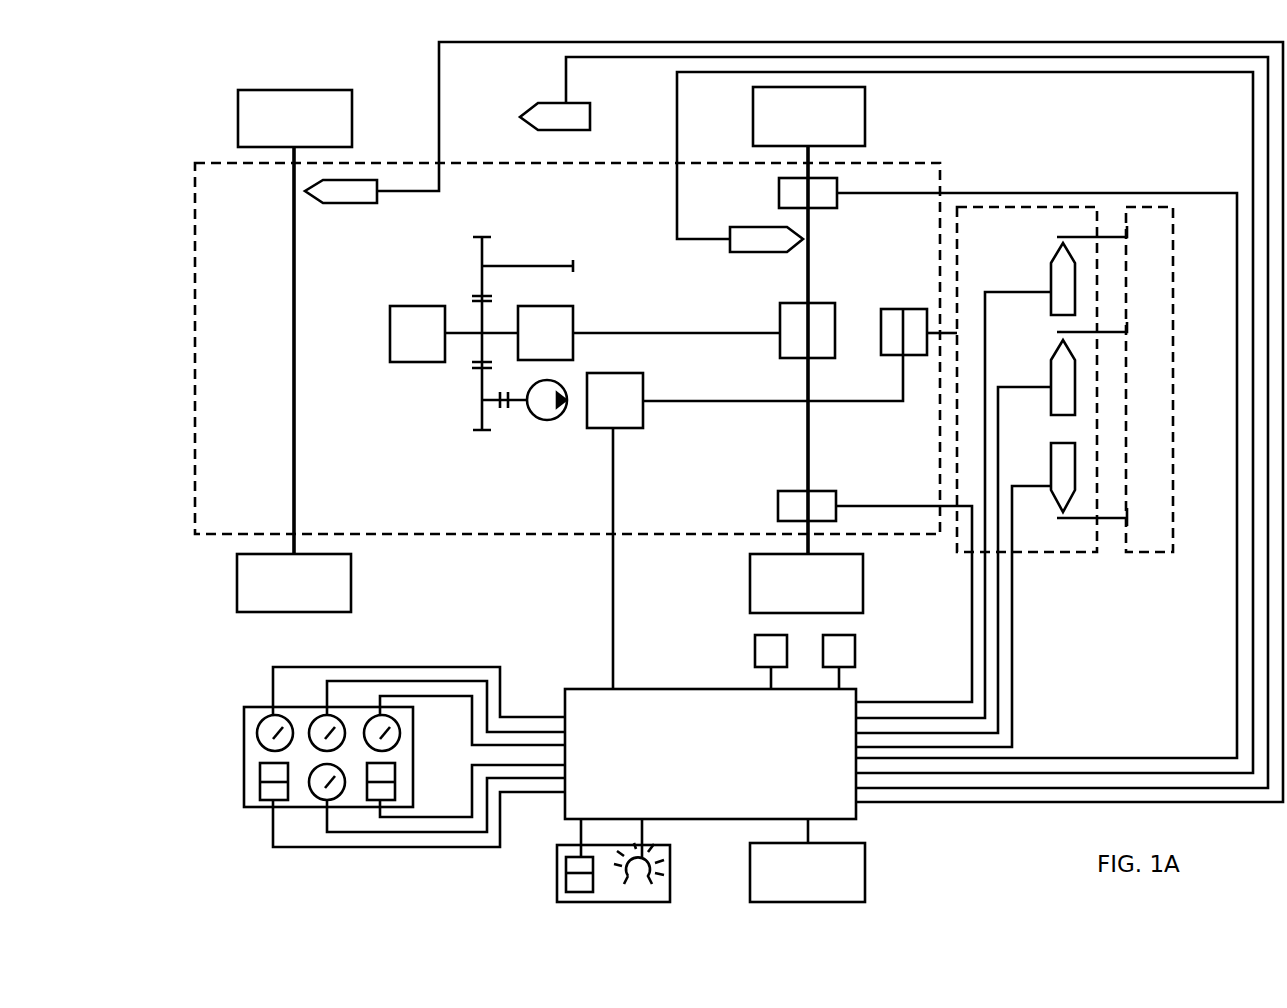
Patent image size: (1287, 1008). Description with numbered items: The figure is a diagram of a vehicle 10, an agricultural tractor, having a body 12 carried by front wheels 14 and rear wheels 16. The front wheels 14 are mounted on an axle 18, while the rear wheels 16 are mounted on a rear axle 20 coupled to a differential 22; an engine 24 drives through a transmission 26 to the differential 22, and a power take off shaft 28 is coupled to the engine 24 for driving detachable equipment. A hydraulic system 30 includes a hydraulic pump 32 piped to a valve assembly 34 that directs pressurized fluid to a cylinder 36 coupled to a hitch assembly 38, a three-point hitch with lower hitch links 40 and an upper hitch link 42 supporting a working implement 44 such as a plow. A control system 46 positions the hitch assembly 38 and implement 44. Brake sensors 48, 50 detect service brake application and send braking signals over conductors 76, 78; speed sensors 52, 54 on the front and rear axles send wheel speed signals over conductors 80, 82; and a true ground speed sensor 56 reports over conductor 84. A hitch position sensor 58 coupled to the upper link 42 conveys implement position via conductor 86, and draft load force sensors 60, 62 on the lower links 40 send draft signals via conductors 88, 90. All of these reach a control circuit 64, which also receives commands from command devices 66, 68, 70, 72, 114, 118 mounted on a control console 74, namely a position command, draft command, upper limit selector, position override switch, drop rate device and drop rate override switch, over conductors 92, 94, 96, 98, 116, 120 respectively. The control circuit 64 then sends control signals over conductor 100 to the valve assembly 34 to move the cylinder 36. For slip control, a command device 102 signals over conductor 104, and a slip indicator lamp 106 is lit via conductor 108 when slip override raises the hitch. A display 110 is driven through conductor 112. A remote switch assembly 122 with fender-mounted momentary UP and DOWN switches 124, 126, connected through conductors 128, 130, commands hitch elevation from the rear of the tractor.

The vehicle 10 is at (168, 167).
The body 12 is at (195, 350).
The front wheels 14 is at (262, 90).
The rear wheels 16 is at (753, 120).
The axle 18 is at (294, 268).
The rear axle 20 is at (808, 455).
The differential 22 is at (822, 303).
The engine 24 is at (402, 306).
The transmission 26 is at (573, 306).
The power take off shaft 28 is at (518, 266).
The hydraulic system 30 is at (518, 433).
The hydraulic pump 32 is at (556, 418).
The valve assembly 34 is at (643, 382).
The cylinder 36 is at (900, 309).
The hitch assembly 38 is at (988, 207).
The lower hitch links 40 is at (1115, 232).
The upper hitch link 42 is at (1108, 334).
The working implement 44 is at (1138, 207).
The control system 46 is at (503, 880).
The brake sensor 48 is at (779, 198).
The brake sensor 50 is at (778, 502).
The speed sensor 52 is at (352, 203).
The speed sensor 54 is at (742, 252).
The true ground speed sensor 56 is at (548, 130).
The hitch position sensor 58 is at (1075, 390).
The draft load force sensor 60 is at (1075, 290).
The draft load force sensor 62 is at (1075, 480).
The control circuit 64 is at (596, 689).
The command device 66 is at (298, 707).
The command device 68 is at (394, 707).
The command device 70 is at (310, 800).
The command device 72 is at (375, 800).
The control console 74 is at (248, 707).
The conductor 76 is at (1050, 193).
The conductor 78 is at (880, 506).
The conductor 80 is at (439, 76).
The conductor 82 is at (677, 150).
The conductor 84 is at (566, 72).
The conductor 86 is at (998, 656).
The conductor 88 is at (985, 690).
The conductor 90 is at (1012, 628).
The conductor 92 is at (448, 667).
The conductor 94 is at (526, 732).
The conductor 96 is at (430, 847).
The conductor 98 is at (540, 790).
The conductor 100 is at (613, 580).
The command device 102 is at (566, 880).
The conductor 104 is at (581, 838).
The slip indicator lamp 106 is at (654, 876).
The conductor 108 is at (642, 834).
The display 110 is at (865, 885).
The conductor 112 is at (808, 831).
The command device 114 is at (257, 737).
The conductor 116 is at (500, 677).
The command device 118 is at (260, 792).
The conductor 120 is at (470, 847).
The remote switch assembly 122 is at (875, 679).
The remote momentary switch 124 is at (755, 645).
The remote momentary switch 126 is at (855, 645).
The conductor 128 is at (771, 680).
The conductor 130 is at (839, 680).